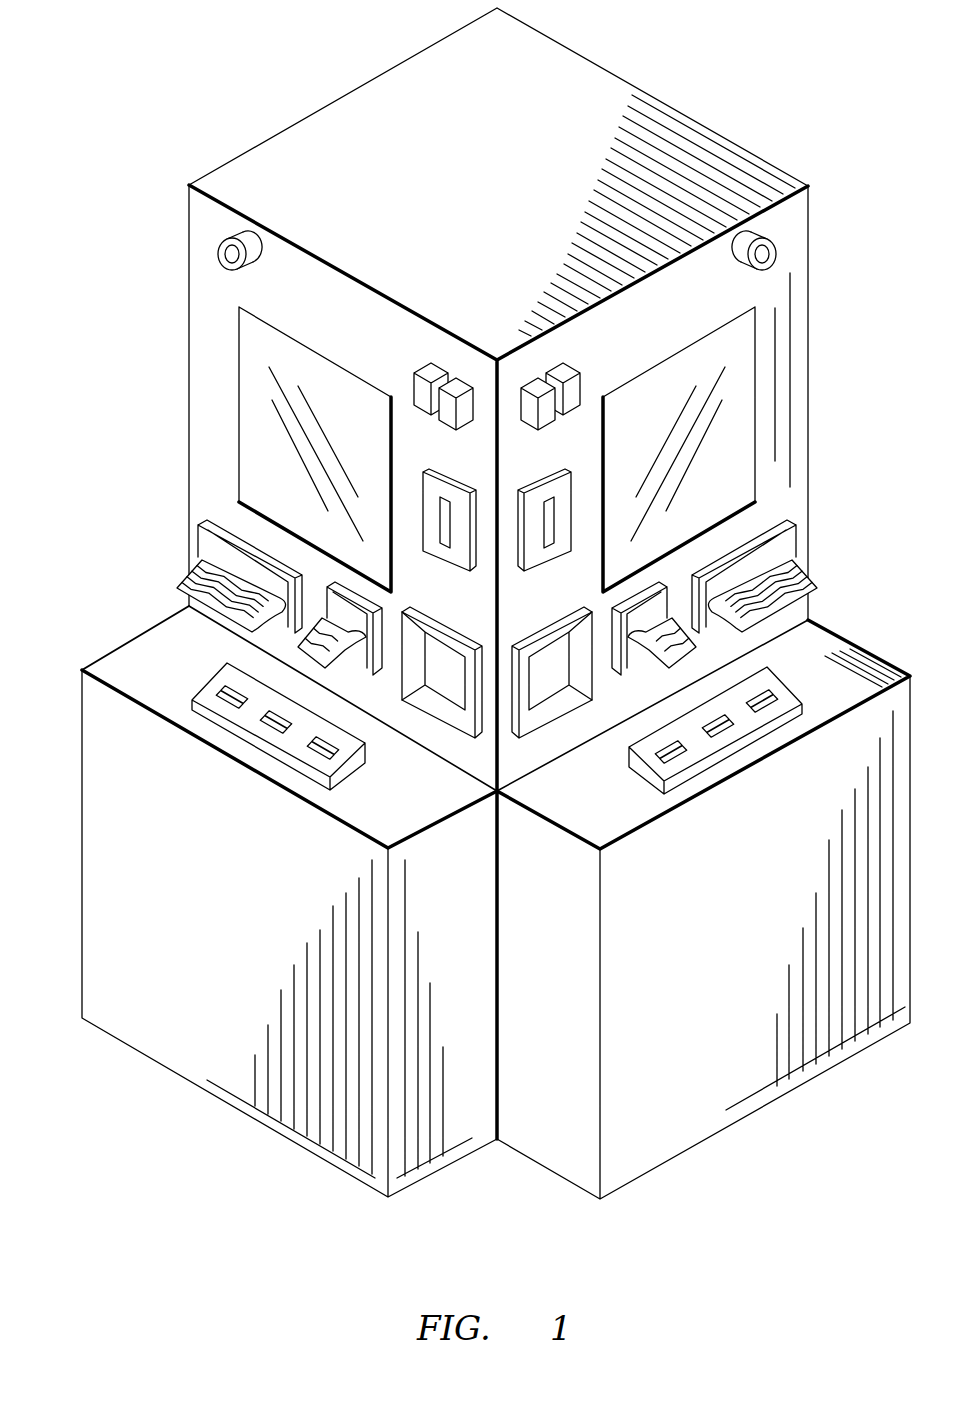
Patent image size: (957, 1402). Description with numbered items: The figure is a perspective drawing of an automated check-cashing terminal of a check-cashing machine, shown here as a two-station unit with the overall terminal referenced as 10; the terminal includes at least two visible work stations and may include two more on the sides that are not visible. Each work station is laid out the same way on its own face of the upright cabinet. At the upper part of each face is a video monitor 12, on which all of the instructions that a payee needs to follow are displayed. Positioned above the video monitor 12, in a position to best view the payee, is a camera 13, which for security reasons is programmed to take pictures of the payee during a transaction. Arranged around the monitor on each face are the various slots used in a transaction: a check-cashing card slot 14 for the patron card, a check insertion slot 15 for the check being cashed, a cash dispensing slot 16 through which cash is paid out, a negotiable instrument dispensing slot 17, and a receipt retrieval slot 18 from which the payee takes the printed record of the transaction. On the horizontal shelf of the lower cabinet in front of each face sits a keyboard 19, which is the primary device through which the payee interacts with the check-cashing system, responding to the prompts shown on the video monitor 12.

The automated check cashing kiosk 10 is at (805, 70).
The video monitor 12 is at (267, 367).
The camera 13 is at (218, 244).
The check-cashing card slot 14 is at (432, 371).
The check insertion slot 15 is at (432, 492).
The cash dispensing slot 16 is at (435, 707).
The negotiable instrument dispensing slot 17 is at (213, 543).
The receipt retrieval slot 18 is at (383, 603).
The keyboard 19 is at (292, 740).